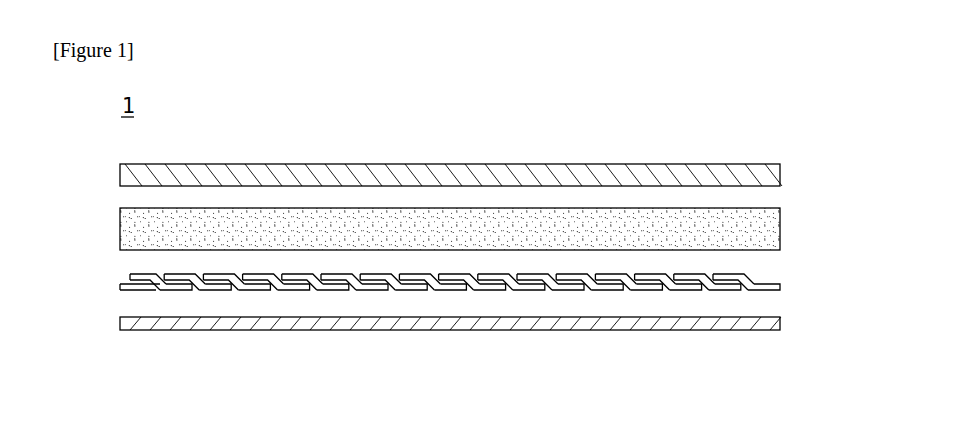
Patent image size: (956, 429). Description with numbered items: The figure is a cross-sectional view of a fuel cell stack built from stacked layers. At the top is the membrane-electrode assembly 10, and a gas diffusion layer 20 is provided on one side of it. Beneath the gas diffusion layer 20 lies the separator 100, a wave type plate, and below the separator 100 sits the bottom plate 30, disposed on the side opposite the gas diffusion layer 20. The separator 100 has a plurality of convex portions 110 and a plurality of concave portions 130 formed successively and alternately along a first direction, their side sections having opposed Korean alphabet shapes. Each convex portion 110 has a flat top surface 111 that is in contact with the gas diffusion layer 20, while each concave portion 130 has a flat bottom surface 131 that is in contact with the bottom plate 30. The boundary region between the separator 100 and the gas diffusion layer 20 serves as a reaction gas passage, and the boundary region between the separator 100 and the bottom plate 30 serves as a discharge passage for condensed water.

The membrane-electrode assembly 10 is at (781, 175).
The gas diffusion layer 20 is at (781, 229).
The bottom plate 30 is at (781, 323).
The separator 100 is at (473, 285).
The convex portion 110 is at (402, 236).
The top surface 111 is at (140, 275).
The concave portion 130 is at (430, 335).
The bottom surface 131 is at (190, 293).